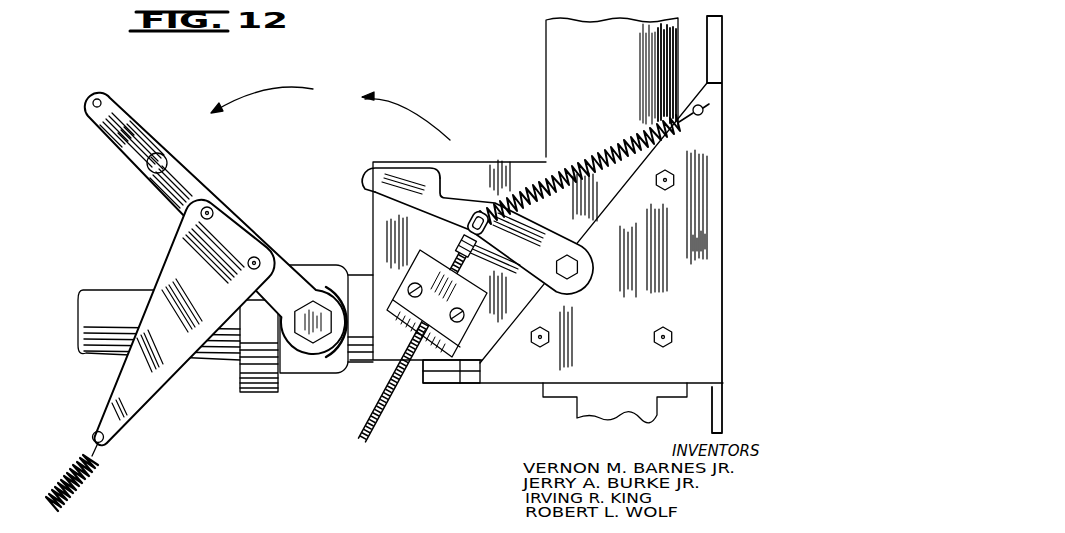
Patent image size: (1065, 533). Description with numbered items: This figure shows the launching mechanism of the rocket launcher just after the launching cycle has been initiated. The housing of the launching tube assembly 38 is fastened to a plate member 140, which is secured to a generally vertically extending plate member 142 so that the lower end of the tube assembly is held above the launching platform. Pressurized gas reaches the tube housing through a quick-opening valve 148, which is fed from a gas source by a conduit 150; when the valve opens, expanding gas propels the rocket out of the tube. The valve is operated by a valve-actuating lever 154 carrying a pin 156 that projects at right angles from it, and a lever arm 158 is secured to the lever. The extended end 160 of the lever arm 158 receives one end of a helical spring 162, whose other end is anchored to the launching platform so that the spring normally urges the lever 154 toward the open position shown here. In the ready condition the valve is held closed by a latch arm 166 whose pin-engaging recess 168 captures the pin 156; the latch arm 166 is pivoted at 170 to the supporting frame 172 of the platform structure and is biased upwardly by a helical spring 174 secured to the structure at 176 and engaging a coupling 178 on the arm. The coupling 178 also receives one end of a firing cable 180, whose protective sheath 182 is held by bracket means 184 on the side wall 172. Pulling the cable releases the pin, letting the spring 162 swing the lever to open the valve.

The launching tube assembly 38 is at (533, 56).
The plate member 140 is at (463, 387).
The vertically extending plate member 142 is at (714, 43).
The quick-opening valve 148 is at (257, 392).
The conduit 150 is at (103, 292).
The valve-actuating lever 154 is at (144, 190).
The pin 156 is at (157, 153).
The lever arm 158 is at (151, 397).
The extended end 160 is at (97, 430).
The helical spring 162 is at (74, 498).
The latch arm 166 is at (378, 165).
The pin-engaging recess 168 is at (446, 165).
The pivot 170 is at (572, 276).
The supporting frame 172 is at (492, 350).
The helical spring 174 is at (576, 170).
The spring anchor 176 is at (696, 104).
The coupling 178 is at (478, 210).
The firing cable 180 is at (457, 240).
The protective sheath 182 is at (402, 403).
The bracket means 184 is at (398, 300).